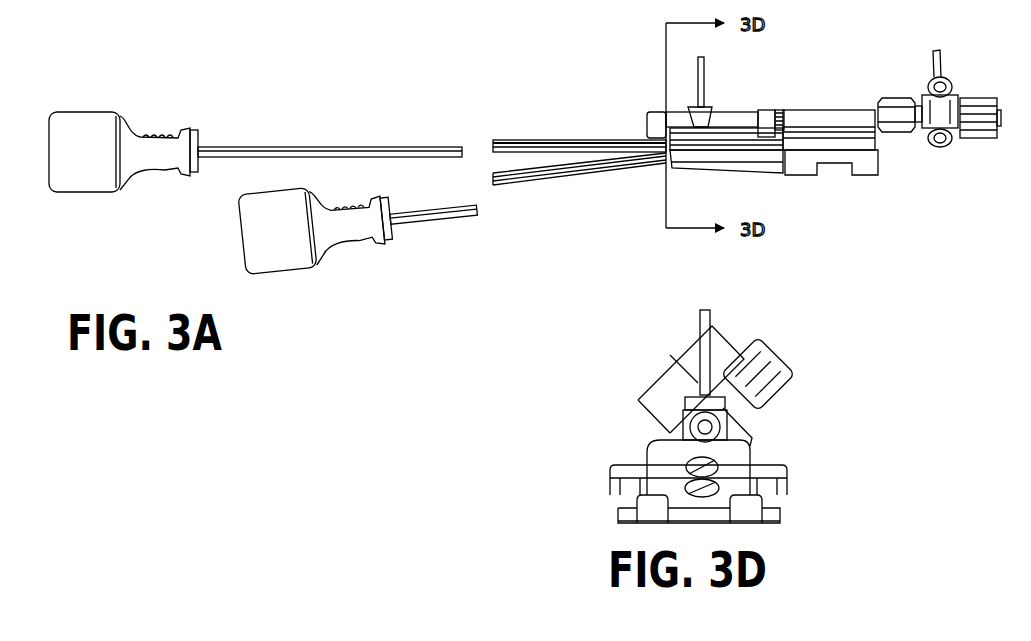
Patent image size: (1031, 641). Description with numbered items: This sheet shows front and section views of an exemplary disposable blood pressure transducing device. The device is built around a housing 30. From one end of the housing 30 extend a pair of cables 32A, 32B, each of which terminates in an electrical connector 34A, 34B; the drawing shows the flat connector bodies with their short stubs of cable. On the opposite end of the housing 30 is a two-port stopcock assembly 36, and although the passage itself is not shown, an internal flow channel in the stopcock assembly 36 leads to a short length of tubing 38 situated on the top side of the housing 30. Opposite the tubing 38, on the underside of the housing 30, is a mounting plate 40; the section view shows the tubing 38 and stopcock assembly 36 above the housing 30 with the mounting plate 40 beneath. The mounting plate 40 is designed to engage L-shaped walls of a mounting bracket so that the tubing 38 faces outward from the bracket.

In FIG. 3A, the housing 30 is at (767, 153).
In FIG. 3D, the housing 30 is at (648, 455).
In FIG. 3A, the cable 32A is at (431, 221).
In FIG. 3A, the cable 32B is at (345, 147).
In FIG. 3A, the electrical connector 34A is at (347, 243).
In FIG. 3A, the electrical connector 34B is at (103, 117).
In FIG. 3A, the two-port stopcock assembly 36 is at (974, 95).
In FIG. 3A, the tubing 38 is at (808, 110).
In FIG. 3D, the mounting plate 40 is at (622, 512).